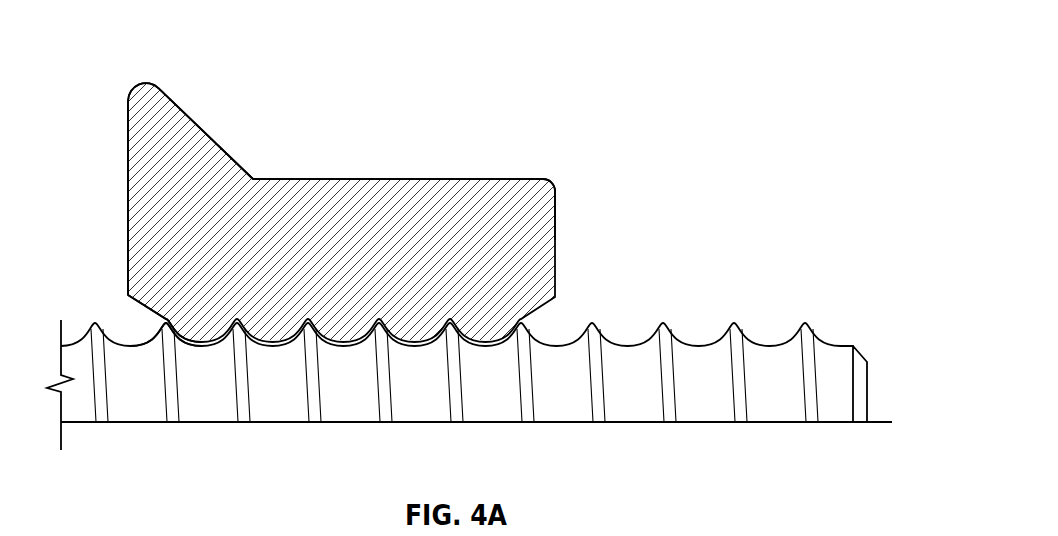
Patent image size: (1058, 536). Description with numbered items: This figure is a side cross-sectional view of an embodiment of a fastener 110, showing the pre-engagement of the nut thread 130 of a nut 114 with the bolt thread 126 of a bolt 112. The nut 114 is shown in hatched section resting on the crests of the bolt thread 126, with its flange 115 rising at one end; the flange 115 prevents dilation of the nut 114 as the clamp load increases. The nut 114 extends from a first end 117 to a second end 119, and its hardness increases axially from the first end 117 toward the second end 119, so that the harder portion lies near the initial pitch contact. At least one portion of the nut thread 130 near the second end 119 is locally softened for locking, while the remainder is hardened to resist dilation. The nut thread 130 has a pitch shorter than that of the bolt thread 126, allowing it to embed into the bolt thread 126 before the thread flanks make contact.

The fastener 110 is at (138, 41).
The bolt 112 is at (803, 370).
The nut 114 is at (379, 205).
The flange 115 is at (138, 117).
The first end 117 is at (556, 200).
The second end 119 is at (128, 217).
The nut thread 130 is at (178, 320).
The bolt thread 126 is at (165, 353).